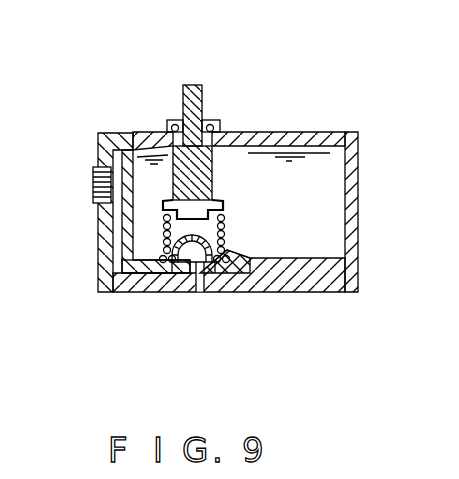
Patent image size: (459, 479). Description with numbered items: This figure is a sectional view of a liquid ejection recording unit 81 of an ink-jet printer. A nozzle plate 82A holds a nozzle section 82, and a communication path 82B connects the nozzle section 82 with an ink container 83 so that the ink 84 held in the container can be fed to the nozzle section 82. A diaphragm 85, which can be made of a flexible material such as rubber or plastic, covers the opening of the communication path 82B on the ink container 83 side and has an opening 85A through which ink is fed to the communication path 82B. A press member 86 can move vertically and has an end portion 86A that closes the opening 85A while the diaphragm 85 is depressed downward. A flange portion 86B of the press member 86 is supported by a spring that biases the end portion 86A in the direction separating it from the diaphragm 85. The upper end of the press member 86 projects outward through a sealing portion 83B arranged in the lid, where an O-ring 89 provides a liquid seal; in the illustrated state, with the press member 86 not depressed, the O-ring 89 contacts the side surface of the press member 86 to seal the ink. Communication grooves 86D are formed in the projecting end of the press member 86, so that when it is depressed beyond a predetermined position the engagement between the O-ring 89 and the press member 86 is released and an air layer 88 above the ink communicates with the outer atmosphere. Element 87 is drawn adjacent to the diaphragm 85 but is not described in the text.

The liquid ejection recording unit 81 is at (105, 122).
The nozzle section 82 is at (93, 187).
The nozzle plate 82A is at (106, 256).
The communication path 82B is at (112, 280).
The ink container 83 is at (325, 287).
The sealing portion 83B is at (213, 118).
The ink 84 is at (333, 172).
The diaphragm 85 is at (191, 238).
The opening 85A is at (204, 263).
The press member 86 is at (184, 86).
The end portion 86A is at (245, 131).
The flange portion 86B is at (230, 206).
The communication grooves 86D is at (172, 118).
The wedge 87 is at (247, 254).
The air layer 88 is at (313, 131).
The O-ring 89 is at (168, 130).